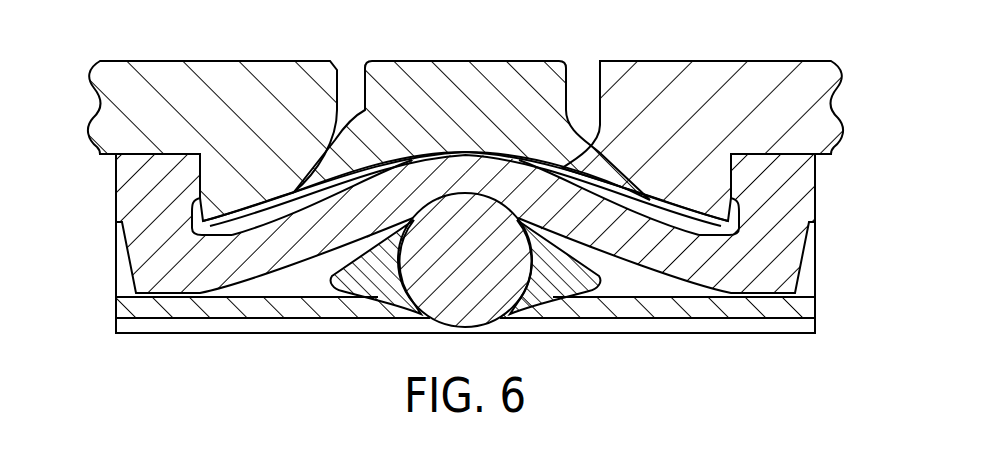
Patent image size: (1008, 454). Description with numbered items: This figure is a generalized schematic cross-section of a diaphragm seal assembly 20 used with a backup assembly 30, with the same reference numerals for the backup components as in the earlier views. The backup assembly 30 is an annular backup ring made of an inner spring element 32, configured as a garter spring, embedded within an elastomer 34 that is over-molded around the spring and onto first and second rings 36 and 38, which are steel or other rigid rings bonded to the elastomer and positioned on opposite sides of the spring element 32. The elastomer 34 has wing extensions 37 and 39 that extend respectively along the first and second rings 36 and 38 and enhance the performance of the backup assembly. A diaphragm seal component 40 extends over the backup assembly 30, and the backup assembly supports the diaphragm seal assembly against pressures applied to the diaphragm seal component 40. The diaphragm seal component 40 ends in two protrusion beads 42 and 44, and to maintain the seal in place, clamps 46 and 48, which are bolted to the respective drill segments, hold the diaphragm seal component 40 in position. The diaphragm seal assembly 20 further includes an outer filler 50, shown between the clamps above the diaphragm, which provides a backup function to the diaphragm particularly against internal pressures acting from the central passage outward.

The diaphragm seal assembly 20 is at (419, 44).
The backup assembly 30 is at (390, 347).
The spring element 32 is at (467, 310).
The elastomer 34 is at (538, 238).
The first ring 36 is at (143, 308).
The wing extension 37 is at (347, 283).
The second ring 38 is at (773, 312).
The wing extension 39 is at (588, 283).
The diaphragm seal component 40 is at (287, 257).
The protrusion bead 42 is at (143, 182).
The protrusion bead 44 is at (788, 182).
The clamp 46 is at (270, 142).
The clamp 48 is at (700, 140).
The outer filler 50 is at (497, 74).